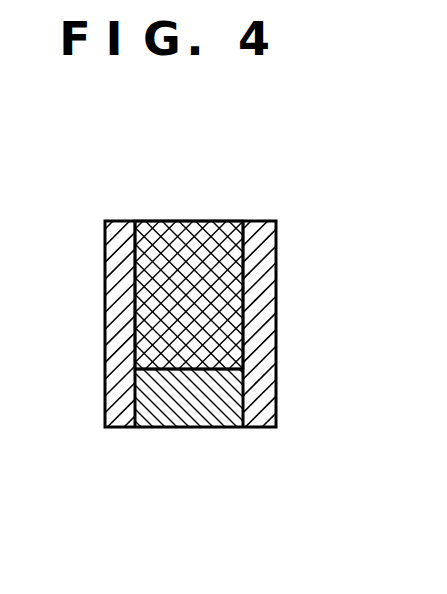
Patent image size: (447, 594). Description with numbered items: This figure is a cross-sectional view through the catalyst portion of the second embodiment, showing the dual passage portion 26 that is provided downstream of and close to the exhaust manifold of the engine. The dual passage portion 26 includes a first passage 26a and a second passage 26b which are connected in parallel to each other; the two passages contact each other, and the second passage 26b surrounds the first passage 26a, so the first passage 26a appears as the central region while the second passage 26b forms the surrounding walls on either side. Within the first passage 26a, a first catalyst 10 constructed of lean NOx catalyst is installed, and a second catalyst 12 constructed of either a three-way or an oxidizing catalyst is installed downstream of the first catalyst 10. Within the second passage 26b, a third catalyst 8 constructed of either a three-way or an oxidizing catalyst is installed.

The third catalyst 8 is at (115, 398).
The first catalyst 10 is at (189, 282).
The second catalyst 12 is at (189, 399).
The dual passage portion 26 is at (280, 371).
The first passage 26a is at (233, 273).
The second passage 26b is at (268, 352).